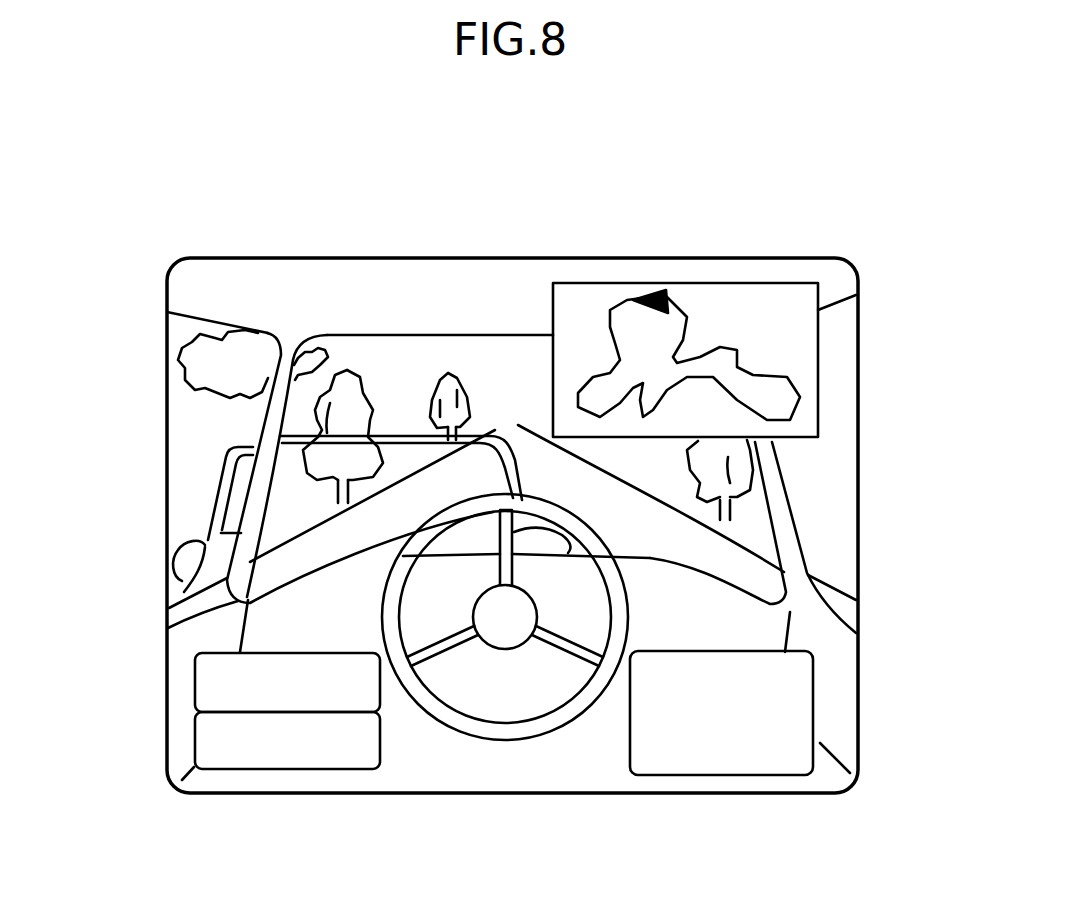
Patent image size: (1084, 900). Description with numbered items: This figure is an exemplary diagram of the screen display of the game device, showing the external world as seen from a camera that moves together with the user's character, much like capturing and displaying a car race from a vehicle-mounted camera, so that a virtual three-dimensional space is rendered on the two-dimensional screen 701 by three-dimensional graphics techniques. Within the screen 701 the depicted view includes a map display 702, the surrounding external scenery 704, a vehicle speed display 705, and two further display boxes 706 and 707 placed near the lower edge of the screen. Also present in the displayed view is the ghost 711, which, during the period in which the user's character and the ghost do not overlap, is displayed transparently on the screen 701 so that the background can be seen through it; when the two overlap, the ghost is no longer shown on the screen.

The screen 701 is at (508, 238).
The map display 702 is at (743, 302).
The external scenery image 704 is at (377, 355).
The vehicle speed display 705 is at (828, 668).
The steering angle display 706 is at (220, 682).
The load weight display 707 is at (257, 762).
The ghost 711 is at (233, 447).